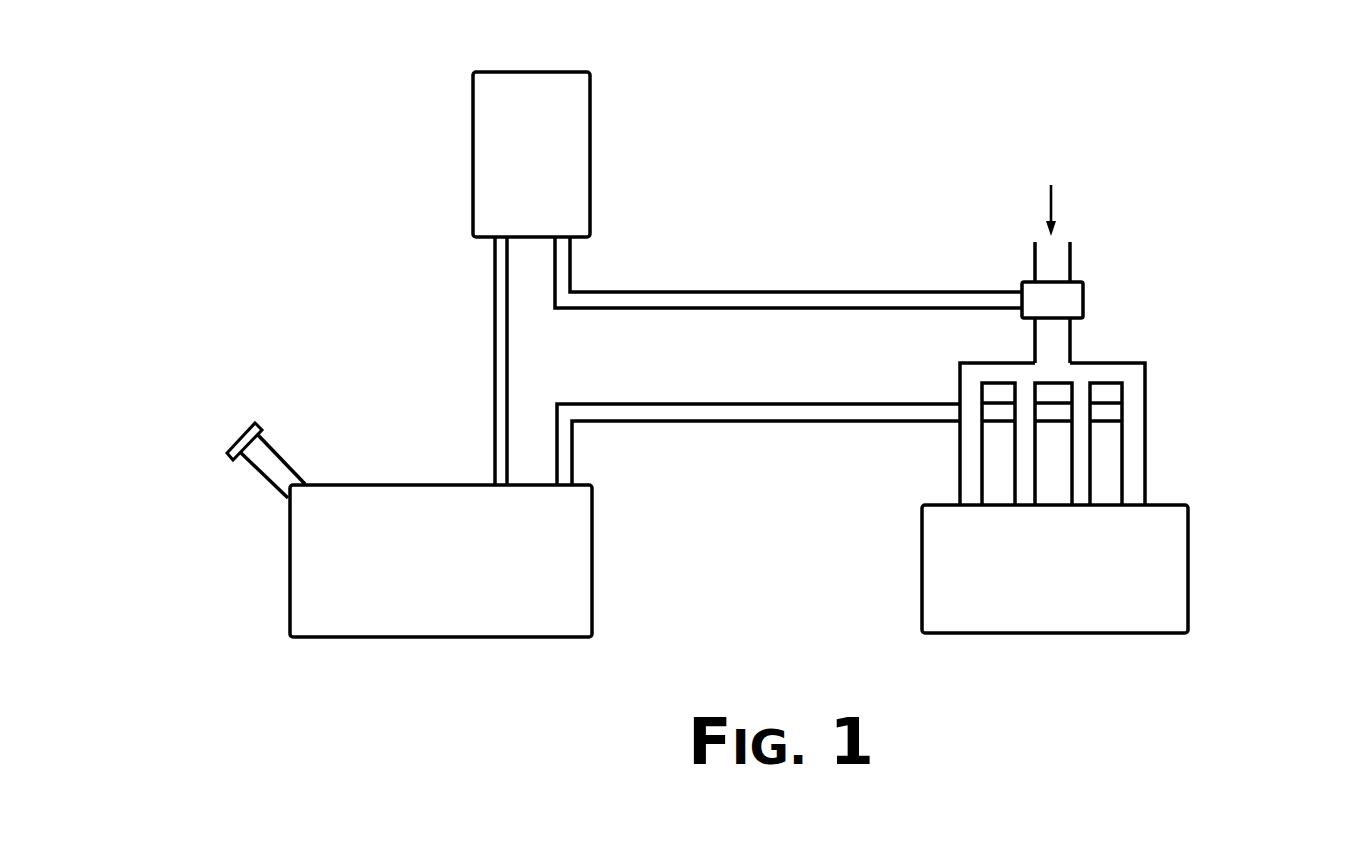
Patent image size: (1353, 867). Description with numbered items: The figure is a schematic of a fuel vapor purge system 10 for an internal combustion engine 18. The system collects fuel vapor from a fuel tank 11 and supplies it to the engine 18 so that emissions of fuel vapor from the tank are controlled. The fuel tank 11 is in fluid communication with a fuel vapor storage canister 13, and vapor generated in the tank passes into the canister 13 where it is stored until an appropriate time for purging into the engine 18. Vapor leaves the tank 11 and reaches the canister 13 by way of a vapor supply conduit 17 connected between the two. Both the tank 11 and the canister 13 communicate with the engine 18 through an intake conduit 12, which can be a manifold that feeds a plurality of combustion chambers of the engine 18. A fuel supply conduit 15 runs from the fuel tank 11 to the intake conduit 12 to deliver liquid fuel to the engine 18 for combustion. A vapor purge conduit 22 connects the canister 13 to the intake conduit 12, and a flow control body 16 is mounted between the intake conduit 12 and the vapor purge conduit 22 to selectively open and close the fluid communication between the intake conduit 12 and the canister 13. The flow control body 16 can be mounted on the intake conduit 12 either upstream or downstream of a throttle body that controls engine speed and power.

The fuel vapor purge system 10 is at (1010, 104).
The fuel tank 11 is at (290, 565).
The intake conduit 12 is at (1070, 260).
The fuel vapor storage canister 13 is at (590, 138).
The fuel supply conduit 15 is at (680, 422).
The flow control body 16 is at (1083, 303).
The vapor supply conduit 17 is at (495, 365).
The internal combustion engine 18 is at (1188, 585).
The vapor purge conduit 22 is at (808, 292).